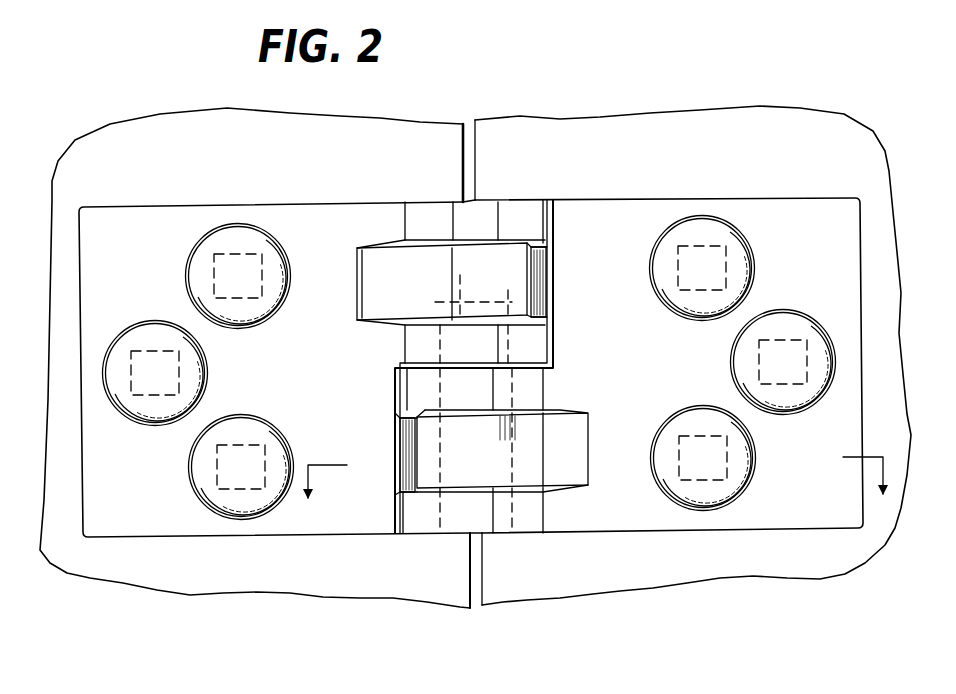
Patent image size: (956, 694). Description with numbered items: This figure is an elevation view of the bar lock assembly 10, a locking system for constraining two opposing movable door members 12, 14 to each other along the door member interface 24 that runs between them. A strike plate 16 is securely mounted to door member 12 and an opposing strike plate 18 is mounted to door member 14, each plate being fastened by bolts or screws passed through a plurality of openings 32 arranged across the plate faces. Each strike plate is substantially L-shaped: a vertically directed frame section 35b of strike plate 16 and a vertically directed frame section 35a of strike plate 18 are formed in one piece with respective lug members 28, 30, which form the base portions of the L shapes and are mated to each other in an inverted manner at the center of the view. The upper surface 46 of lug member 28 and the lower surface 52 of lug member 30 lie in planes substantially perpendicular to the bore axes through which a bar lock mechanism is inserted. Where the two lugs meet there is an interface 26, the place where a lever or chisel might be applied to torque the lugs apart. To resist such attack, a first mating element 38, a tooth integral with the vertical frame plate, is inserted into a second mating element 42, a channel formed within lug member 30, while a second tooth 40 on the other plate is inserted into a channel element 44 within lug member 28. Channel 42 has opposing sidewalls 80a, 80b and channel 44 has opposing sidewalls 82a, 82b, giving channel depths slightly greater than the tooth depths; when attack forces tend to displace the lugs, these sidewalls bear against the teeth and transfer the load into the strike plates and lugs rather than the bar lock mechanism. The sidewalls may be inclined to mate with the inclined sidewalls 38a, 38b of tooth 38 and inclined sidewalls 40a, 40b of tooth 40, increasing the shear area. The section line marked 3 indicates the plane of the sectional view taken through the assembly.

The bar lock assembly 10 is at (471, 339).
The door member 12 is at (355, 136).
The door member 14 is at (578, 120).
The strike plate 16 is at (200, 535).
The strike plate 18 is at (693, 522).
The door member interface 24 is at (470, 140).
The interface between lug members 26 is at (538, 377).
The lug member 28 is at (428, 212).
The lug member 30 is at (430, 534).
The openings 32 is at (240, 418).
The vertically directed frame section 35a is at (669, 360).
The vertically directed frame section 35b is at (274, 372).
The first mating element 38 is at (410, 446).
The inclined sidewall 38a is at (398, 415).
The inclined sidewall 38b is at (398, 495).
The first mating element 40 is at (546, 268).
The inclined sidewall 40a is at (547, 257).
The inclined sidewall 40b is at (550, 310).
The second mating element 42 is at (570, 450).
The second mating element 44 is at (513, 275).
The upper surface of lug member 46 is at (495, 202).
The lower surface of lug member 52 is at (520, 535).
The sidewall of second mating element 80a is at (560, 412).
The sidewall of second mating element 80b is at (545, 490).
The sidewall of second mating element 82a is at (460, 242).
The sidewall of second mating element 82b is at (445, 318).
The section line 3- 3 is at (598, 454).